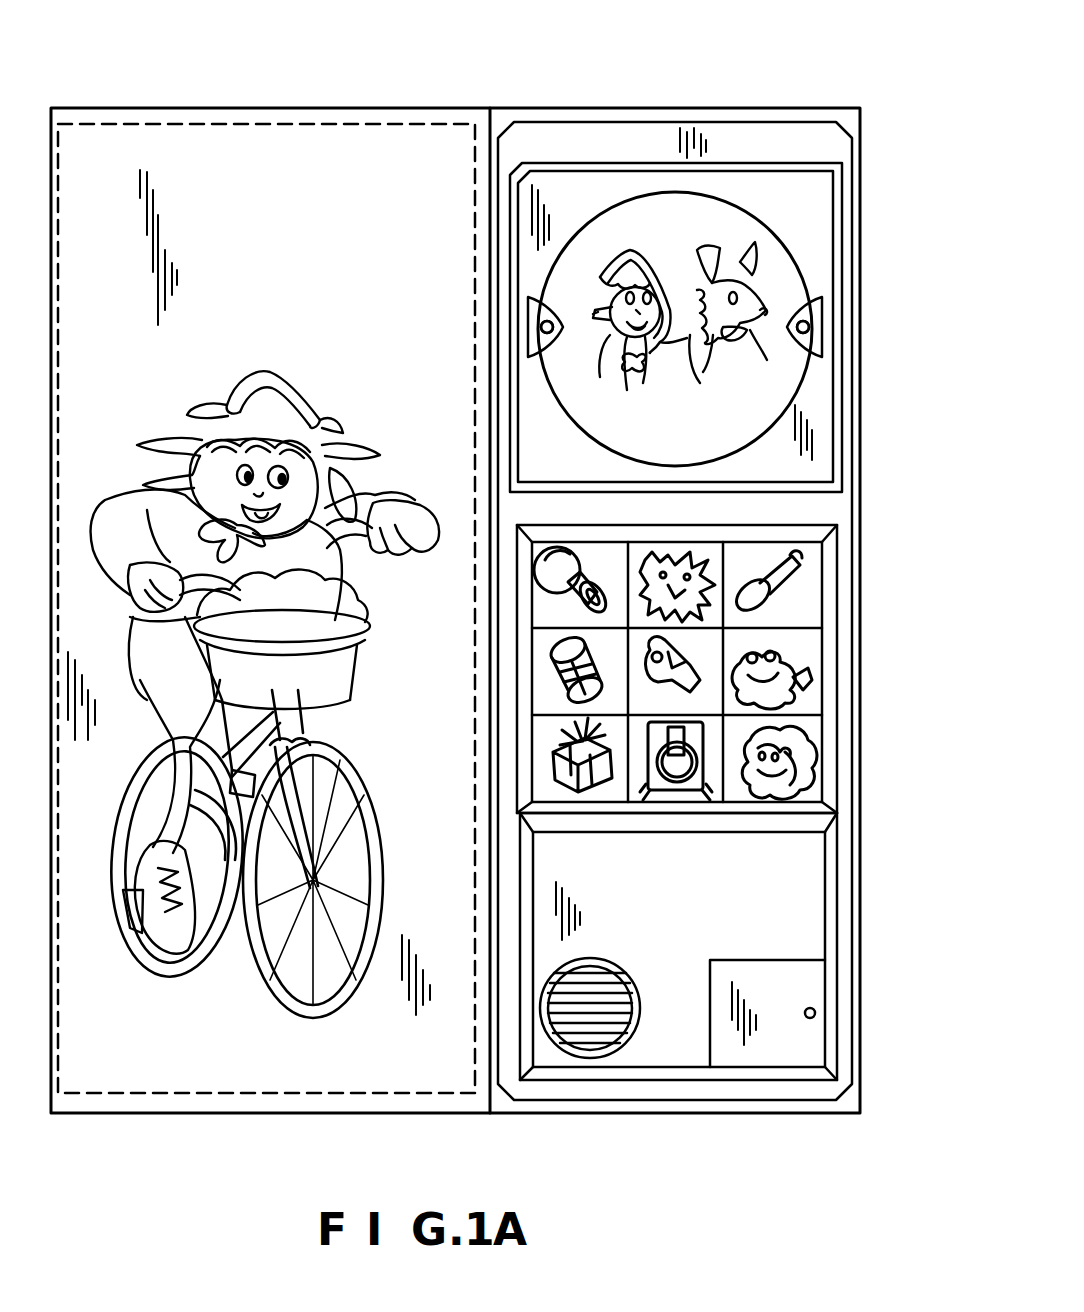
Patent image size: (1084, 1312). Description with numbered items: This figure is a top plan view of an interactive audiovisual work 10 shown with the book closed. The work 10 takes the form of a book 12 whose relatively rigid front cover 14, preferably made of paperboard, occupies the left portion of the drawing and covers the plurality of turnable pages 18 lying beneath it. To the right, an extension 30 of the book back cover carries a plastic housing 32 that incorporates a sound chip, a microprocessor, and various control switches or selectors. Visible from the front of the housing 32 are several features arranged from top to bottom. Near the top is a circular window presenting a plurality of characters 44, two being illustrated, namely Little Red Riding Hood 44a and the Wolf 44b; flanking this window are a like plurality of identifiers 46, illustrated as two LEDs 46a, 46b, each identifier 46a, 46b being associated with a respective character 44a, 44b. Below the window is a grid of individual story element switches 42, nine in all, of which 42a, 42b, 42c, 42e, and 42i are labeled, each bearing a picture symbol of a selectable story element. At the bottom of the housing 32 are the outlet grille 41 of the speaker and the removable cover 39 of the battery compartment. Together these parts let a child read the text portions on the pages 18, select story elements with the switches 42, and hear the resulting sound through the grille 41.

The interactive audiovisual work 10 is at (446, 58).
The book 12 is at (370, 126).
The front cover 14 is at (265, 145).
The turnable pages 18 is at (192, 172).
The extension 30 is at (853, 1100).
The housing 32 is at (503, 1100).
The removable cover 39 is at (770, 960).
The outlet grille 41 is at (622, 986).
The story element switches 42 is at (800, 593).
The story element switch 42a is at (602, 552).
The story element switch 42b is at (700, 556).
The story element switch 42c is at (752, 560).
The story element switch 42e is at (655, 722).
The story element switch 42i is at (805, 793).
The characters 44 is at (705, 240).
The Little Red Riding Hood 44a is at (630, 250).
The Wolf 44b is at (755, 245).
The identifiers 46 is at (528, 300).
The LED 46a is at (528, 328).
The LED 46b is at (822, 328).